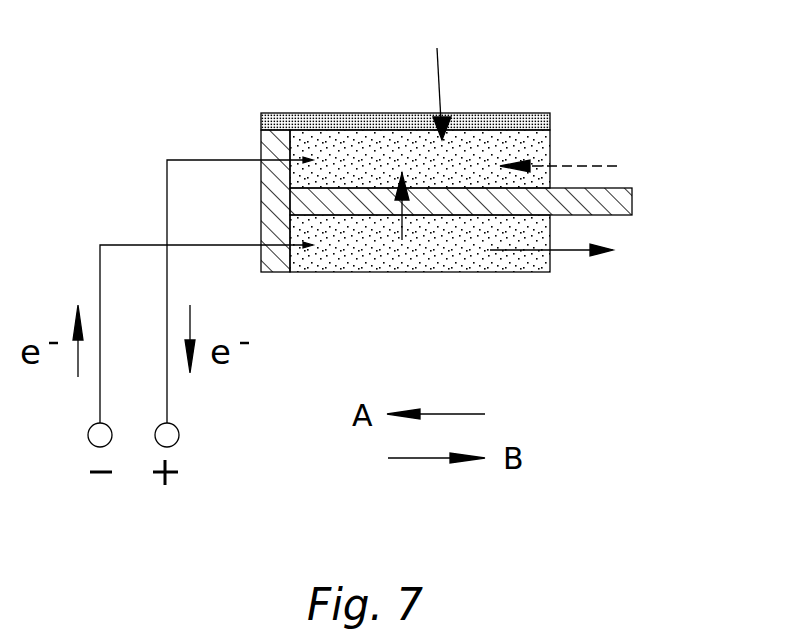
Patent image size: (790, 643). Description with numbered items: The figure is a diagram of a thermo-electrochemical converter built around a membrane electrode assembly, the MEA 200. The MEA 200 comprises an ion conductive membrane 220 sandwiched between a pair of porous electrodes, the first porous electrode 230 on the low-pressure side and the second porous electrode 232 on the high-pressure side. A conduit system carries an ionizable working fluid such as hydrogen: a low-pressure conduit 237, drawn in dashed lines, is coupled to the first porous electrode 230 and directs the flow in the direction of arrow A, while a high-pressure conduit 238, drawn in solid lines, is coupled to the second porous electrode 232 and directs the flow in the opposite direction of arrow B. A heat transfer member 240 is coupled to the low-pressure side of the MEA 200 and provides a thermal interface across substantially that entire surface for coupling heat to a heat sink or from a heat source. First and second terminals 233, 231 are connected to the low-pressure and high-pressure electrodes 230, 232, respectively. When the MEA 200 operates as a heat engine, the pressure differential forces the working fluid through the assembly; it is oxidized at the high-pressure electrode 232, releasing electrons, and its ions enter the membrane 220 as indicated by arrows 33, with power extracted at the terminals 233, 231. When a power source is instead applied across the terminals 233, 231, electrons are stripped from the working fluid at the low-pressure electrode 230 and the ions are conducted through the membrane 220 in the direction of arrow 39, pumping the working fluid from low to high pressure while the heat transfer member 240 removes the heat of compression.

The MEA 200 is at (170, 73).
The heat transfer member 240 is at (330, 122).
The first porous electrode 230 is at (548, 146).
The membrane 220 is at (458, 190).
The second porous electrode 232 is at (550, 230).
The arrow 39 is at (432, 81).
The arrows 33 is at (407, 217).
The low-pressure conduit 237 is at (616, 166).
The high-pressure conduit 238 is at (614, 251).
The first terminal 233 is at (198, 163).
The second terminal 231 is at (123, 243).